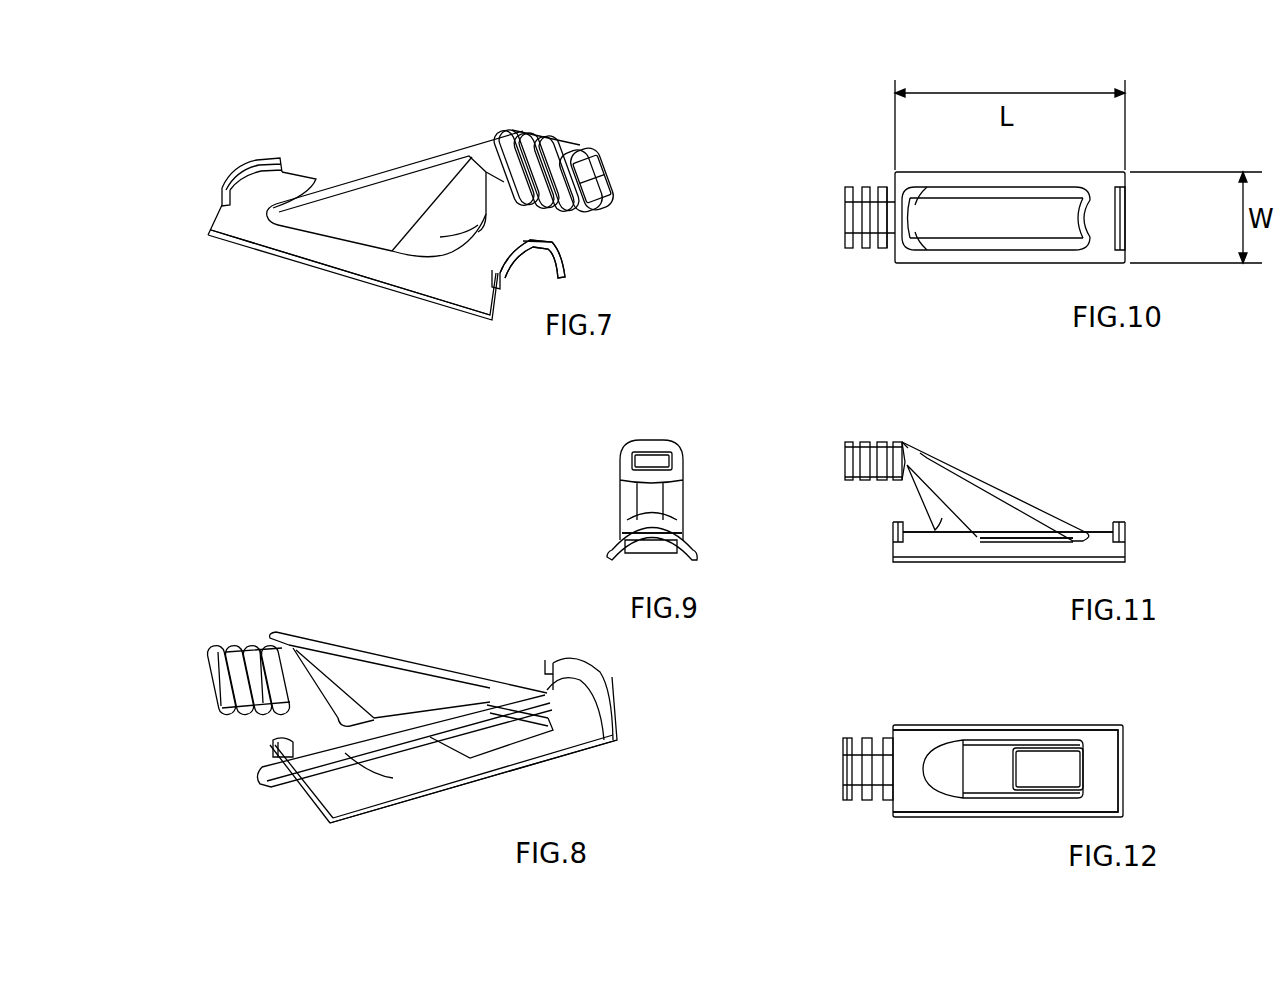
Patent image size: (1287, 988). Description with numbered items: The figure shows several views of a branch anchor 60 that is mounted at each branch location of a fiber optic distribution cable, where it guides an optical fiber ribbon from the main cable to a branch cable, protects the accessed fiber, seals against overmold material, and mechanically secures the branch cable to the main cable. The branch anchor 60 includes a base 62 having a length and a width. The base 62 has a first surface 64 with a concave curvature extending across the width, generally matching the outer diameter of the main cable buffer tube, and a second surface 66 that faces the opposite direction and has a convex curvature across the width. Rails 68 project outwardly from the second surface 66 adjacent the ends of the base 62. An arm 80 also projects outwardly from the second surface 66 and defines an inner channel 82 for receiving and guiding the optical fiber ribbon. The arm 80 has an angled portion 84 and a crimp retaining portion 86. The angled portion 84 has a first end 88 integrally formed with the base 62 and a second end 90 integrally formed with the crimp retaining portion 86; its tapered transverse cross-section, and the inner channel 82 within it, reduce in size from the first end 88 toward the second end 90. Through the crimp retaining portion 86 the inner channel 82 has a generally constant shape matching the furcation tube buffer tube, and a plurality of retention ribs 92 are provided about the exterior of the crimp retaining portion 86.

In FIG. 7, the branch anchor 60 is at (378, 143).
In FIG. 8, the branch anchor 60 is at (393, 596).
In FIG. 9, the branch anchor 60 is at (675, 425).
In FIG. 10, the branch anchor 60 is at (905, 268).
In FIG. 11, the branch anchor 60 is at (1035, 437).
In FIG. 12, the branch anchor 60 is at (1118, 698).
In FIG. 7, the base 62 is at (402, 297).
In FIG. 8, the base 62 is at (600, 742).
In FIG. 10, the base 62 is at (950, 265).
In FIG. 11, the base 62 is at (927, 563).
In FIG. 12, the base 62 is at (1123, 728).
In FIG. 7, the first surface 64 is at (537, 270).
In FIG. 8, the first surface 64 is at (330, 785).
In FIG. 9, the first surface 64 is at (617, 560).
In FIG. 12, the first surface 64 is at (1105, 780).
In FIG. 7, the second surface 66 is at (295, 250).
In FIG. 8, the second surface 66 is at (522, 688).
In FIG. 9, the second surface 66 is at (608, 545).
In FIG. 10, the second surface 66 is at (1097, 180).
In FIG. 11, the second surface 66 is at (1100, 535).
In FIG. 7, the rails 68 is at (258, 160).
In FIG. 8, the rails 68 is at (560, 660).
In FIG. 10, the rails 68 is at (1122, 222).
In FIG. 11, the rails 68 is at (893, 525).
In FIG. 7, the arm 80 is at (450, 143).
In FIG. 8, the arm 80 is at (338, 630).
In FIG. 9, the arm 80 is at (692, 480).
In FIG. 10, the arm 80 is at (995, 250).
In FIG. 11, the arm 80 is at (965, 476).
In FIG. 12, the arm 80 is at (1003, 769).
In FIG. 7, the inner channel 82 is at (600, 172).
In FIG. 8, the inner channel 82 is at (478, 740).
In FIG. 12, the inner channel 82 is at (1050, 765).
In FIG. 7, the angled portion 84 is at (323, 218).
In FIG. 8, the angled portion 84 is at (388, 660).
In FIG. 11, the angled portion 84 is at (998, 508).
In FIG. 7, the crimp retaining portion 86 is at (592, 130).
In FIG. 8, the crimp retaining portion 86 is at (240, 640).
In FIG. 10, the crimp retaining portion 86 is at (850, 182).
In FIG. 11, the crimp retaining portion 86 is at (870, 434).
In FIG. 12, the crimp retaining portion 86 is at (860, 736).
In FIG. 7, the first end 88 is at (357, 243).
In FIG. 11, the first end 88 is at (1075, 530).
In FIG. 7, the second end 90 is at (530, 130).
In FIG. 11, the second end 90 is at (897, 437).
In FIG. 8, the retention ribs 92 is at (222, 650).
In FIG. 10, the retention ribs 92 is at (878, 250).
In FIG. 12, the retention ribs 92 is at (865, 802).